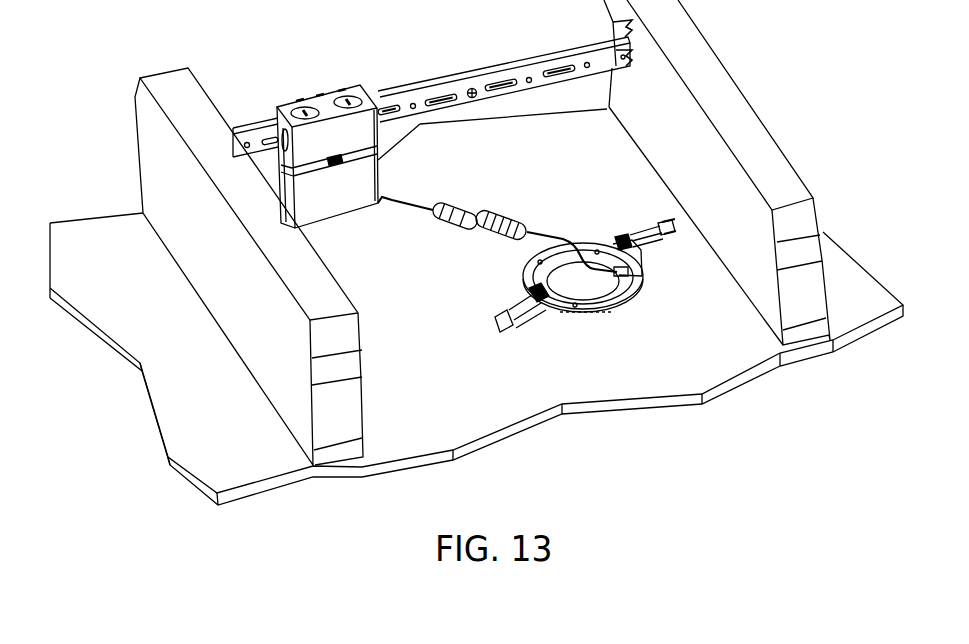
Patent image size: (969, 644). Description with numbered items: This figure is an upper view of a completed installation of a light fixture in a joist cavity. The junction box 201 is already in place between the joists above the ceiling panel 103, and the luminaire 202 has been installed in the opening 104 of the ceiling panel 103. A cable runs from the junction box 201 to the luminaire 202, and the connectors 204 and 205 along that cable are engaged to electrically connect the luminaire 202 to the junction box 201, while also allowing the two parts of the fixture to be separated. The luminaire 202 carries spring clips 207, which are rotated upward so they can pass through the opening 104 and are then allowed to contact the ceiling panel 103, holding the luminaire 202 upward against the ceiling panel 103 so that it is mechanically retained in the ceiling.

The ceiling panel 103 is at (165, 403).
The junction box 201 is at (276, 104).
The connector 204 is at (463, 209).
The connector 205 is at (492, 219).
The spring clips 207 is at (655, 230).
The luminaire 202 is at (598, 288).
The opening 104 is at (562, 314).